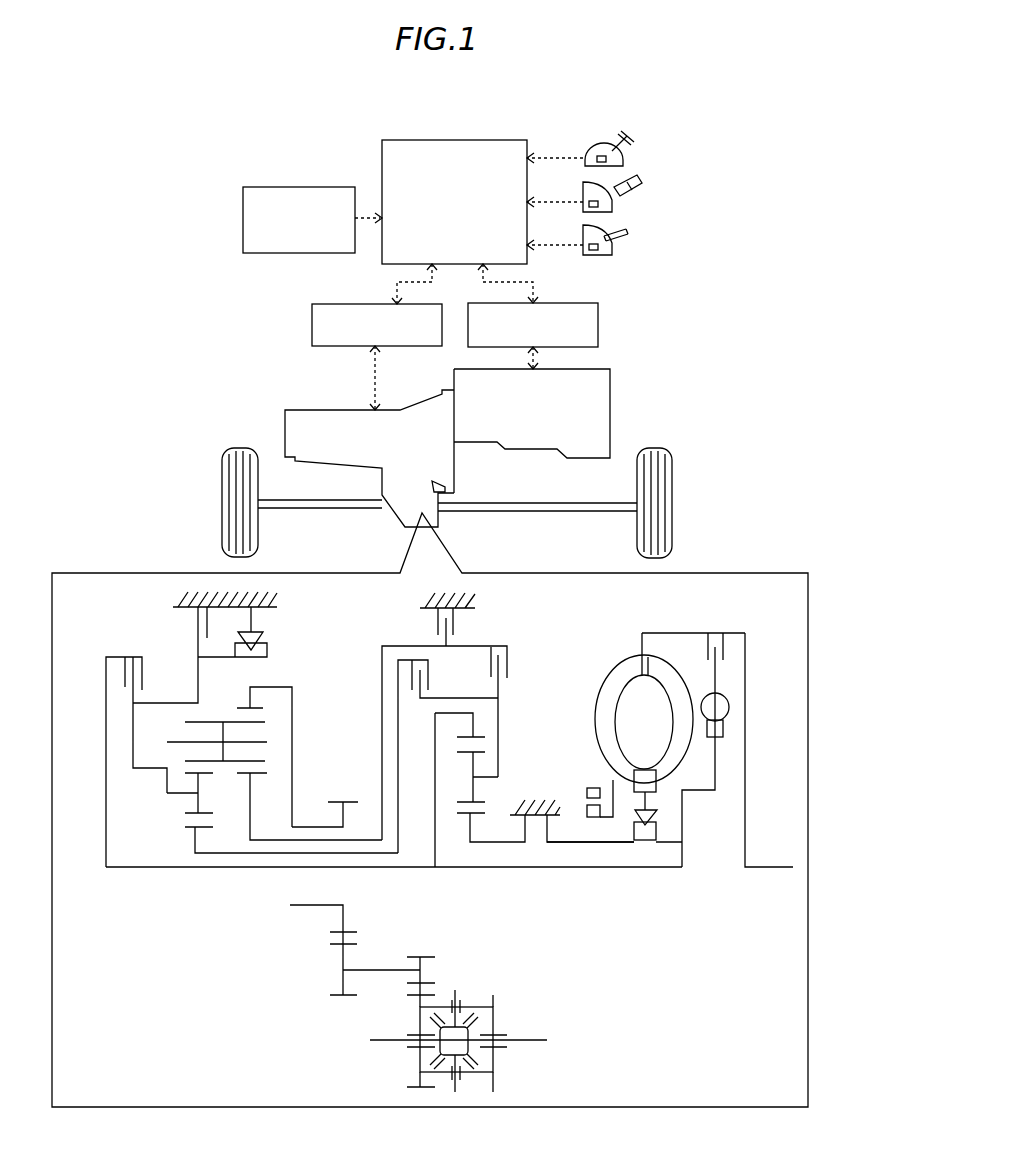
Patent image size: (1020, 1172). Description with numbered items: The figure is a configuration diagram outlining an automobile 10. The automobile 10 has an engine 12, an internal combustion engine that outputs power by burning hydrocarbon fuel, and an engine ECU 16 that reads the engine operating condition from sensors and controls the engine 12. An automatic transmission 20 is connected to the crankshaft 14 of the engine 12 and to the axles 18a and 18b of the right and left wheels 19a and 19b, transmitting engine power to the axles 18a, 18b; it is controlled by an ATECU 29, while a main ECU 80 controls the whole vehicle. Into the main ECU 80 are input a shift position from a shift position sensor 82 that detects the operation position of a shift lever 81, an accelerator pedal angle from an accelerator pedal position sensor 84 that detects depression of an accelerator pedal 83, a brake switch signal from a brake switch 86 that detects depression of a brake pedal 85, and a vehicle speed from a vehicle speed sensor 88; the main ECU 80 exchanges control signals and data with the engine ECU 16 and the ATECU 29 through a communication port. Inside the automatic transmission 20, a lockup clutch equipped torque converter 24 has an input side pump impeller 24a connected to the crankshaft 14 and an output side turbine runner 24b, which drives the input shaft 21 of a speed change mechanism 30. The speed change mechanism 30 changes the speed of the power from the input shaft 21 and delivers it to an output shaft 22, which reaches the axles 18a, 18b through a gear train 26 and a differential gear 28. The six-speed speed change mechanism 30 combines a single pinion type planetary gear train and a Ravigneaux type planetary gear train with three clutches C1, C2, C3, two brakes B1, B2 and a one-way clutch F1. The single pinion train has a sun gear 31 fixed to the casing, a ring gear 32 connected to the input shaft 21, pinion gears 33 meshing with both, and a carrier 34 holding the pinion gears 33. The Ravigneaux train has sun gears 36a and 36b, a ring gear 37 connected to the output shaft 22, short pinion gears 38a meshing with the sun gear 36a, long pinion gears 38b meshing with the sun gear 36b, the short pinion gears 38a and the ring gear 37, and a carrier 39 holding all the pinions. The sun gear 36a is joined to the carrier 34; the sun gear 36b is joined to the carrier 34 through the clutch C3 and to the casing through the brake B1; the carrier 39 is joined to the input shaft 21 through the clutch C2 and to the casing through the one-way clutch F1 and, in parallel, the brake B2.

The automobile 10 is at (139, 148).
The engine 12 is at (611, 408).
The crankshaft 14 is at (756, 868).
The engine ECU 16 is at (576, 303).
The axle 18a is at (493, 503).
The axle 18b is at (293, 500).
The right wheel 19a is at (672, 504).
The left wheel 19b is at (222, 505).
The automatic transmission 20 is at (285, 437).
The input shaft 21 is at (641, 868).
The output shaft 22 is at (323, 822).
The torque converter 24 is at (650, 735).
The pump impeller 24a is at (596, 700).
The turbine runner 24b is at (660, 676).
The gear train 26 is at (440, 963).
The differential gear 28 is at (496, 1003).
The ATECU 29 is at (312, 327).
The speed change mechanism 30 is at (245, 918).
The sun gear 31 is at (466, 818).
The ring gear 32 is at (486, 736).
The pinion gears 33 is at (485, 800).
The carrier 34 is at (498, 772).
The sun gear 36a is at (195, 832).
The sun gear 36b is at (250, 776).
The ring gear 37 is at (257, 705).
The short pinion gears 38a is at (195, 800).
The long pinion gears 38b is at (210, 720).
The carrier 39 is at (136, 762).
The main ECU 80 is at (382, 170).
The shift lever 81 is at (630, 138).
The shift position sensor 82 is at (625, 161).
The accelerator pedal 83 is at (640, 179).
The accelerator pedal position sensor 84 is at (613, 203).
The brake pedal 85 is at (628, 231).
The brake switch 86 is at (613, 246).
The vehicle speed sensor 88 is at (243, 215).
The brake B1 is at (458, 620).
The brake B2 is at (195, 612).
The clutch C1 is at (398, 677).
The clutch C2 is at (106, 668).
The clutch C3 is at (508, 656).
The one-way clutch F1 is at (268, 640).